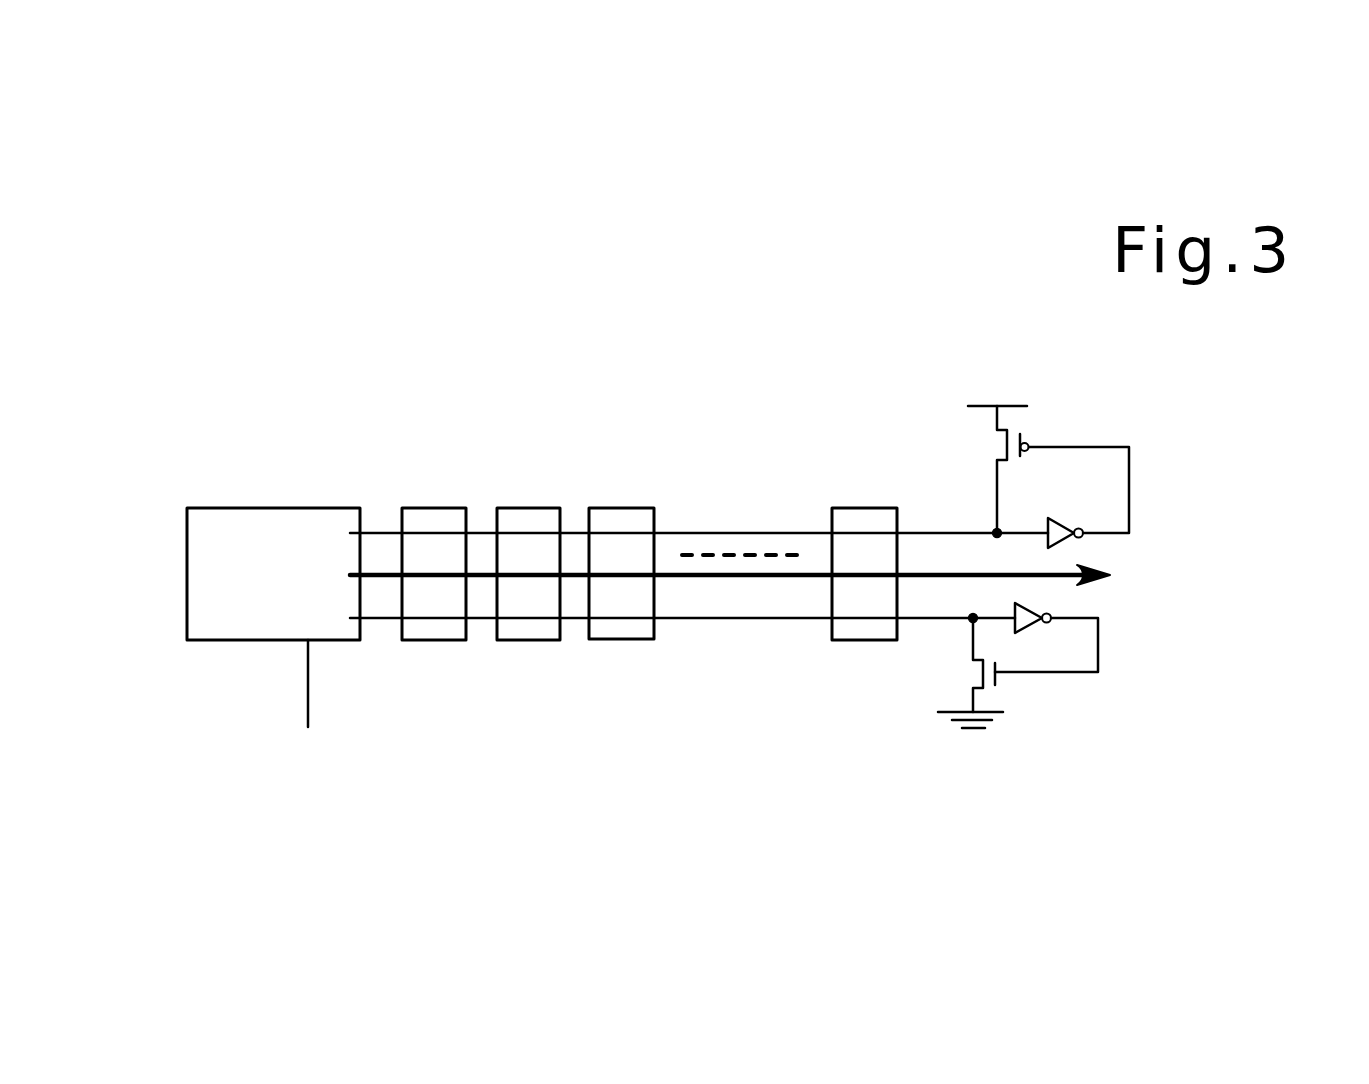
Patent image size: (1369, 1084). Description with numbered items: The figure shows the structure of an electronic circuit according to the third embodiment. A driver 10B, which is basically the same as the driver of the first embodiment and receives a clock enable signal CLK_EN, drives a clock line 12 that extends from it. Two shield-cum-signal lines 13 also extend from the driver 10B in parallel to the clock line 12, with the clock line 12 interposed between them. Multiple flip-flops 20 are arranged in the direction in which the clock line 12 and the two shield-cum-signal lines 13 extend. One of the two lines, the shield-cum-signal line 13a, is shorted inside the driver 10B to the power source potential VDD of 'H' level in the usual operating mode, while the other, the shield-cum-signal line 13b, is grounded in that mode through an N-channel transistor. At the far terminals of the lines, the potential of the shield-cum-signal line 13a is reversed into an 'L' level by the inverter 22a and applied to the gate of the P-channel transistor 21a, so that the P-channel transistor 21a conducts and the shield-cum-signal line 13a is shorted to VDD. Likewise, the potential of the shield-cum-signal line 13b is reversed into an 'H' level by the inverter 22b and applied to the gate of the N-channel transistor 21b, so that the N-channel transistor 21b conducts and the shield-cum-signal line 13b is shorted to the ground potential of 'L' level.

The driver 10B is at (276, 508).
The clock line 12 is at (618, 575).
The shield-cum-signal lines 13 is at (699, 450).
The shield-cum-signal line 13a is at (687, 533).
The shield-cum-signal line 13b is at (752, 618).
The flip-flops 20 is at (513, 508).
The P-channel transistor 21a is at (993, 448).
The N-channel transistor 21b is at (970, 671).
The inverter 22a is at (1060, 517).
The inverter 22b is at (1037, 602).